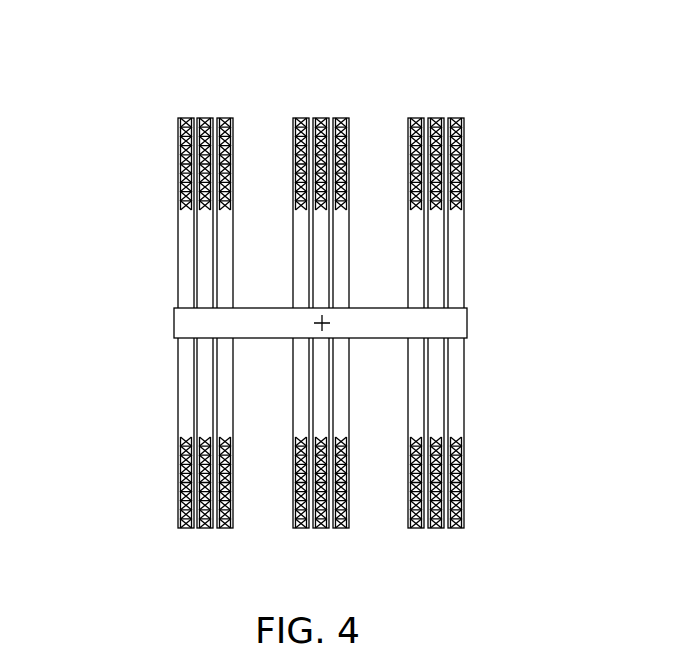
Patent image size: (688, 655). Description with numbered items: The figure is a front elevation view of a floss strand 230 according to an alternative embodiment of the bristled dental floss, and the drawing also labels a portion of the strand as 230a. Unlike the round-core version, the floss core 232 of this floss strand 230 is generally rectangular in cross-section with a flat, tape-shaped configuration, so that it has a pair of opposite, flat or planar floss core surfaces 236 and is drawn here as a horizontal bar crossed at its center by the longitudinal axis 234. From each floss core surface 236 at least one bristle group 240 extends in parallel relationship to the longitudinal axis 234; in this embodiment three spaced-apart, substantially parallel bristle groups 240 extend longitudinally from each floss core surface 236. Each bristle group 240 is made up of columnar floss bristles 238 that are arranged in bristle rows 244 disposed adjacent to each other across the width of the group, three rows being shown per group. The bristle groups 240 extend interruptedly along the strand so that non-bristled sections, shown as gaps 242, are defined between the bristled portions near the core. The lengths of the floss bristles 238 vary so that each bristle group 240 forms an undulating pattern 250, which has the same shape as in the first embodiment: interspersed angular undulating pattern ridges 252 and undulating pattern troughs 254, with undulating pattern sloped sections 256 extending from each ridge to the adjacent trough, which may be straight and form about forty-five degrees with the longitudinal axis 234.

The floss strand 230 is at (390, 47).
The heat exchanger core section 230a is at (416, 72).
The floss core 232 is at (193, 326).
The longitudinal axis 234 is at (318, 323).
The floss core surface 236 is at (390, 308).
The floss bristle 238 is at (225, 227).
The bristle group 240 is at (317, 314).
The gap 242 is at (286, 232).
The bristle row 244 is at (301, 114).
The undulating pattern 250 is at (143, 138).
The undulating pattern ridge 252 is at (203, 116).
The undulating pattern trough 254 is at (185, 212).
The undulating pattern sloped section 256 is at (178, 165).